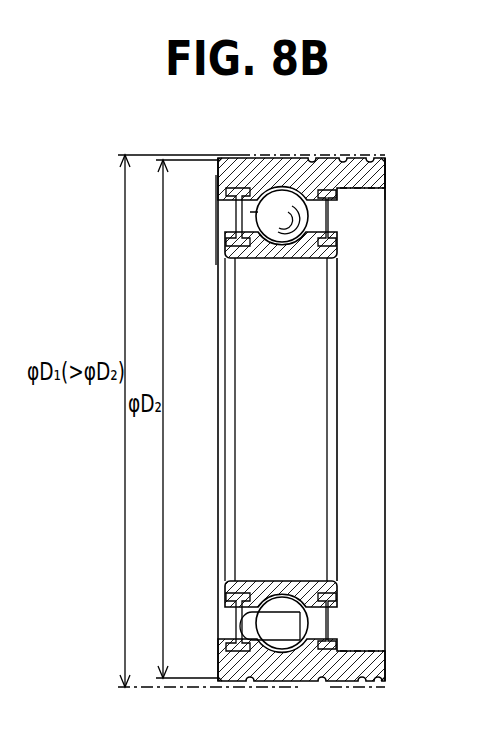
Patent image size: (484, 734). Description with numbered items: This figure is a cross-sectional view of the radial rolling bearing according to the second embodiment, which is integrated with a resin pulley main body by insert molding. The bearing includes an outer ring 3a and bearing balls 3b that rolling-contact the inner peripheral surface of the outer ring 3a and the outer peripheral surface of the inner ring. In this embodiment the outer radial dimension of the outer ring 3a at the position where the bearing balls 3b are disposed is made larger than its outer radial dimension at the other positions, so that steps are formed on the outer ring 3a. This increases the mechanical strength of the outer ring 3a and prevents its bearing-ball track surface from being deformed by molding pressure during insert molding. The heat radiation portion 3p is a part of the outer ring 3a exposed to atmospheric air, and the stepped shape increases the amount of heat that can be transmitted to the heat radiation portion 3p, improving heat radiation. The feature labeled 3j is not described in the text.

The outer ring 3a is at (330, 168).
The bearing balls 3b is at (296, 212).
The side face of outer ring 3j is at (388, 160).
The heat radiation portion 3p is at (217, 170).